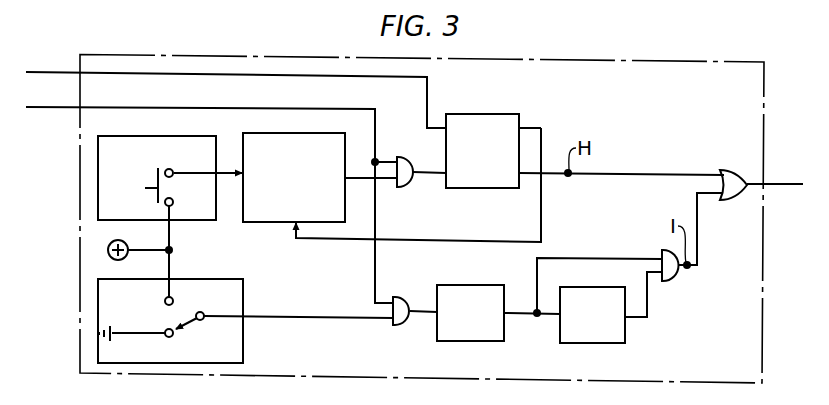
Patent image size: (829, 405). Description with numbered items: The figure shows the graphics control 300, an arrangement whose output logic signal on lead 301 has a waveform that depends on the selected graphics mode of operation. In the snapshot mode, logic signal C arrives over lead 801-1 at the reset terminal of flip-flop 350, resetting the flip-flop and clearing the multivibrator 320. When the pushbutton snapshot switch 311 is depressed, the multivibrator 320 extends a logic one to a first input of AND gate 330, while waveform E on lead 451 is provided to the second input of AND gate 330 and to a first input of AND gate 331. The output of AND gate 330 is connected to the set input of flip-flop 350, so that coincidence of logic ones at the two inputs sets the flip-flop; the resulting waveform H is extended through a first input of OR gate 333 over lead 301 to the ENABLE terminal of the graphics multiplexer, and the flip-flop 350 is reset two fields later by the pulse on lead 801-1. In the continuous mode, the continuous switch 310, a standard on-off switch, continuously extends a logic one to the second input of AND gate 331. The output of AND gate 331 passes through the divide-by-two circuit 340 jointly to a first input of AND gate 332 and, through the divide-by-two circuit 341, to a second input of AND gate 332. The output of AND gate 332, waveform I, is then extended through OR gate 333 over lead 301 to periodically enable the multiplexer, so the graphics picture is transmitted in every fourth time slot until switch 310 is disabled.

The graphics control 300 is at (718, 51).
The lead 301 is at (784, 183).
The lead 801-1 is at (53, 71).
The lead 451 is at (50, 108).
The pushbutton snapshot switch 311 is at (144, 134).
The continuous switch 310 is at (208, 279).
The multivibrator 320 is at (299, 133).
The AND gate 330 is at (411, 188).
The AND gate 331 is at (397, 326).
The AND gate 332 is at (679, 280).
The OR gate 333 is at (725, 171).
The ÷2 circuit 340 is at (470, 342).
The ÷2 circuit 341 is at (597, 344).
The flip-flop 350 is at (478, 113).